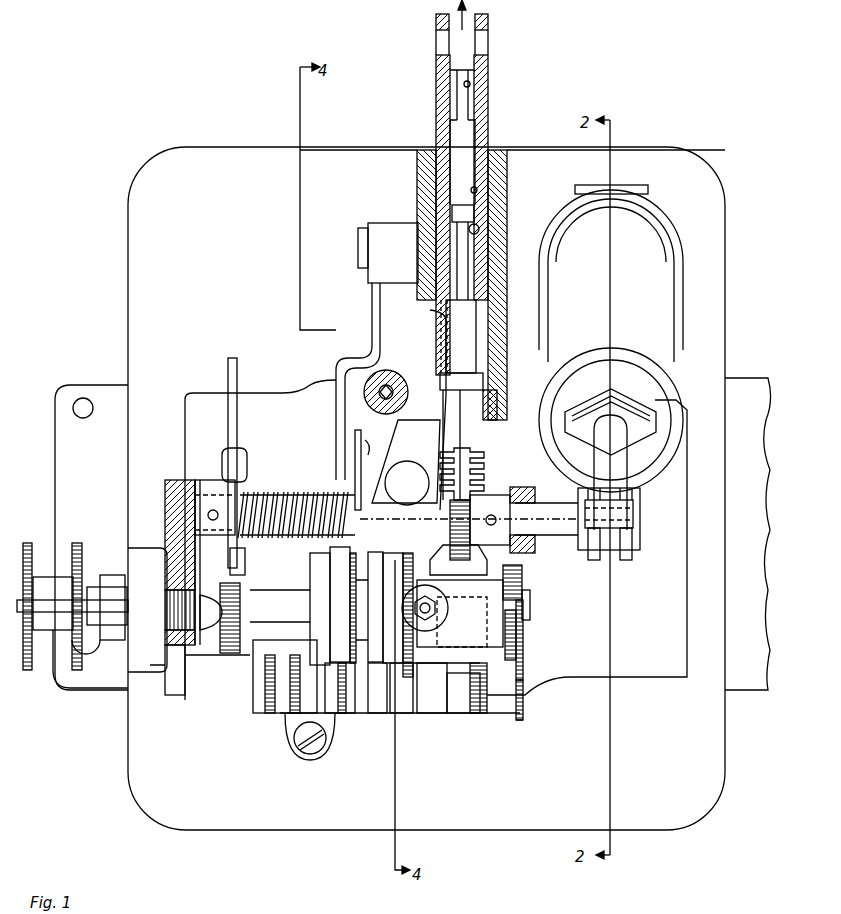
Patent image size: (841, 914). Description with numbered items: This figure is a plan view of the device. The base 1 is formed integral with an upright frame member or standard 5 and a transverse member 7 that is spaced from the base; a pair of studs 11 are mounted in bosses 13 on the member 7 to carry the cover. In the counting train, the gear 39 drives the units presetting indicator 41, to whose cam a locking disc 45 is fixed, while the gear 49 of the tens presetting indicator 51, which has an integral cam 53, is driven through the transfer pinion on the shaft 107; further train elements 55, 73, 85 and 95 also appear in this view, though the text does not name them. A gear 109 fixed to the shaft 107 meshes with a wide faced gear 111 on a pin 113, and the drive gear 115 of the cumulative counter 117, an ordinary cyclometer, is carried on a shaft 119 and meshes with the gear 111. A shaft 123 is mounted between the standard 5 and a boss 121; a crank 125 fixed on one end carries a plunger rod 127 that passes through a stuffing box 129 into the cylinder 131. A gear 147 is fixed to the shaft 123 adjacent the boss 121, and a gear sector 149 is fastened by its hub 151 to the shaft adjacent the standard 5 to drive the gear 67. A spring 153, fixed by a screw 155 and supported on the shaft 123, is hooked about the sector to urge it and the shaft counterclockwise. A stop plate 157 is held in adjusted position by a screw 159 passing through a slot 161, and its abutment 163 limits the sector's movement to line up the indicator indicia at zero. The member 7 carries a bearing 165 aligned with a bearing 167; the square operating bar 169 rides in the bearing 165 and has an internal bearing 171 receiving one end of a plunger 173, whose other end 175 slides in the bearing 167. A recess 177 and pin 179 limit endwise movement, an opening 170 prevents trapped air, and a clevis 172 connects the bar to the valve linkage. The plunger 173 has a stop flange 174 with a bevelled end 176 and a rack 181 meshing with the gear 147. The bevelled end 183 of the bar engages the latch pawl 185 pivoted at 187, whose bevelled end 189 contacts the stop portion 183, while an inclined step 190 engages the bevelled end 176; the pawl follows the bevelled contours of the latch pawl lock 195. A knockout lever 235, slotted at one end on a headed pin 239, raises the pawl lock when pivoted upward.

The base 1 is at (686, 748).
The upright frame member 5 is at (150, 560).
The transverse member 7 is at (410, 196).
The studs 11 is at (352, 362).
The bosses 13 is at (440, 600).
The gear 39 is at (410, 648).
The units presetting indicator 41 is at (398, 615).
The locking disc 45 is at (372, 722).
The gear 49 is at (348, 712).
The tens presetting indicator 51 is at (343, 605).
The cam 53 is at (291, 609).
The gear 55 is at (398, 712).
The gear 67 is at (235, 652).
The shaft 73 is at (58, 608).
The gear 85 is at (82, 558).
The gear 95 is at (34, 545).
The shaft 107 is at (518, 628).
The gear 109 is at (524, 654).
The wide faced gear 111 is at (522, 577).
The pin 113 is at (530, 597).
The drive gear 115 is at (524, 717).
The cumulative counter 117 is at (300, 705).
The shaft 119 is at (524, 678).
The boss 121 is at (522, 487).
The shaft 123 is at (546, 510).
The crank 125 is at (636, 498).
The plunger rod 127 is at (622, 470).
The stuffing box 129 is at (610, 422).
The cylinder 131 is at (665, 328).
The gear 147 is at (450, 515).
The gear sector 149 is at (237, 380).
The hub 151 is at (210, 463).
The spring 153 is at (252, 490).
The screw 155 is at (355, 465).
The stop plate 157 is at (190, 660).
The screw 159 is at (168, 628).
The slot 161 is at (168, 592).
The abutment 163 is at (246, 560).
The bearing 165 is at (492, 158).
The bearing 167 is at (492, 630).
The operating bar 169 is at (484, 96).
The opening 170 is at (468, 80).
The internal bearing 171 is at (476, 193).
The clevis 172 is at (488, 25).
The plunger 173 is at (476, 213).
The stop flange 174 is at (484, 380).
The end of plunger 175 is at (458, 560).
The bevelled end 176 is at (497, 410).
The recess 177 is at (470, 284).
The pin 179 is at (480, 229).
The rack 181 is at (485, 458).
The bevelled end 183 is at (445, 308).
The latch pawl 185 is at (425, 461).
The pivot 187 is at (420, 493).
The bevelled end 189 is at (441, 316).
The inclined step 190 is at (442, 395).
The latch pawl lock 195 is at (398, 380).
The knockout lever 235 is at (366, 285).
The headed pin 239 is at (358, 246).